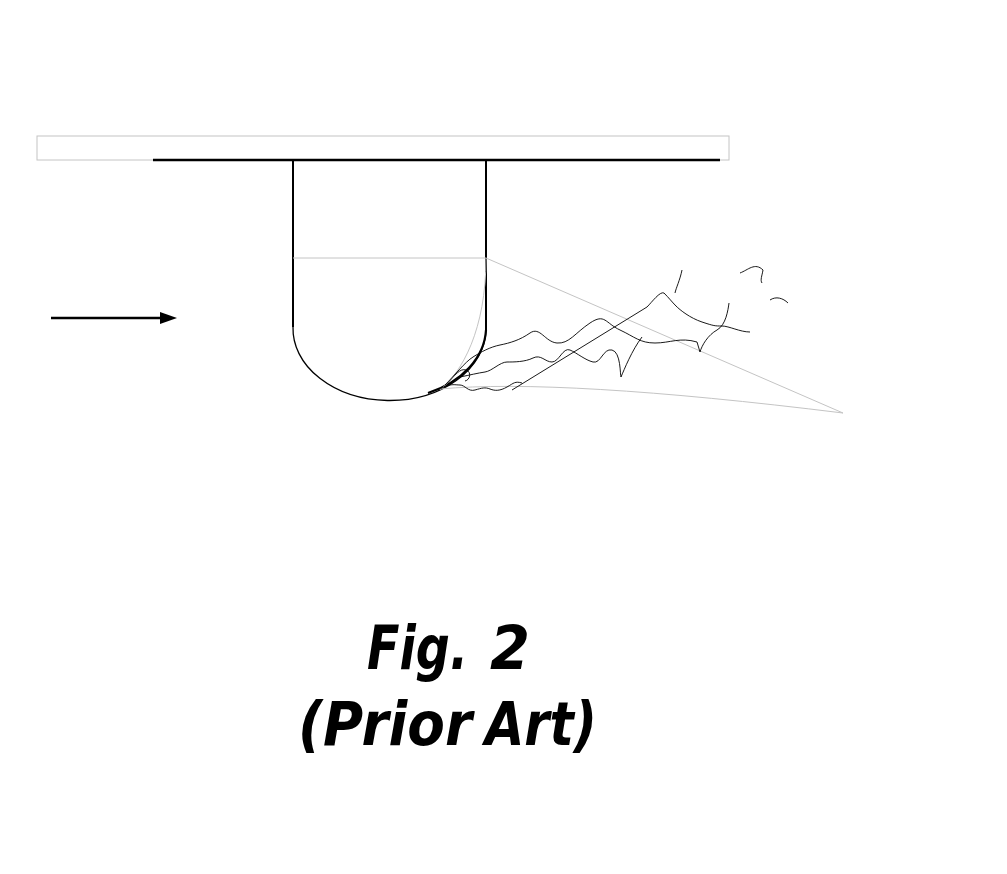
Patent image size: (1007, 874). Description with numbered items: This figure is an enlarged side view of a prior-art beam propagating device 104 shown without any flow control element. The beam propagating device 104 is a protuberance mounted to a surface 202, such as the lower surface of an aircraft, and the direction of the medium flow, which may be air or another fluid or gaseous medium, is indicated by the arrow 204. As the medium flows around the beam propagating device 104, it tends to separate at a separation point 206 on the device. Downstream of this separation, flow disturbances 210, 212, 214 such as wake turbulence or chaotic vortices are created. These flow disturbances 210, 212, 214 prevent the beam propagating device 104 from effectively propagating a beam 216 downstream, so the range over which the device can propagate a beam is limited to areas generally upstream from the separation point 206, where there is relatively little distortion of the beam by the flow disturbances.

The beam propagating device 104 is at (367, 305).
The surface 202 is at (601, 146).
The arrow 204 is at (114, 291).
The separation point 206 is at (427, 395).
The flow disturbance 210 is at (682, 270).
The flow disturbance 212 is at (729, 303).
The flow disturbance 214 is at (750, 332).
The beam 216 is at (514, 302).